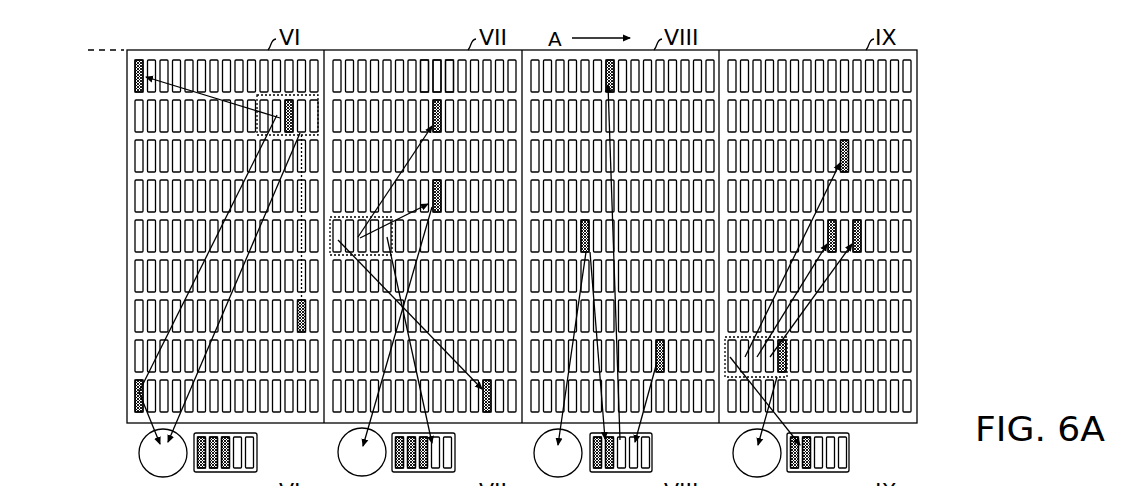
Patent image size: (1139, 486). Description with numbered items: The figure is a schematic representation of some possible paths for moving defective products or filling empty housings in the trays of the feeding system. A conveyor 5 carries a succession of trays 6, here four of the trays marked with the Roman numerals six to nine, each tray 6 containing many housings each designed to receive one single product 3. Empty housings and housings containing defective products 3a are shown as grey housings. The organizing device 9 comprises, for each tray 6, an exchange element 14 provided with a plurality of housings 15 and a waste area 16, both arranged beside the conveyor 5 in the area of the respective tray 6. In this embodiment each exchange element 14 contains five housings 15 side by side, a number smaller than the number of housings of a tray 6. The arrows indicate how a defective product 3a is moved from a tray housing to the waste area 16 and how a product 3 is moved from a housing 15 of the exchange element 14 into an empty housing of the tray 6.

The product 3 is at (448, 61).
The defective product 3a is at (132, 397).
The conveyor 5 is at (699, 424).
The tray 6 is at (917, 133).
The organizing device 9 is at (463, 433).
The exchange element 14 is at (257, 465).
The housing of the exchange element 15 is at (457, 452).
The waste area 16 is at (139, 457).